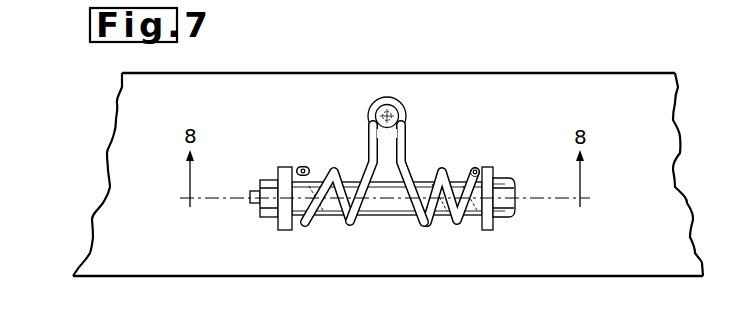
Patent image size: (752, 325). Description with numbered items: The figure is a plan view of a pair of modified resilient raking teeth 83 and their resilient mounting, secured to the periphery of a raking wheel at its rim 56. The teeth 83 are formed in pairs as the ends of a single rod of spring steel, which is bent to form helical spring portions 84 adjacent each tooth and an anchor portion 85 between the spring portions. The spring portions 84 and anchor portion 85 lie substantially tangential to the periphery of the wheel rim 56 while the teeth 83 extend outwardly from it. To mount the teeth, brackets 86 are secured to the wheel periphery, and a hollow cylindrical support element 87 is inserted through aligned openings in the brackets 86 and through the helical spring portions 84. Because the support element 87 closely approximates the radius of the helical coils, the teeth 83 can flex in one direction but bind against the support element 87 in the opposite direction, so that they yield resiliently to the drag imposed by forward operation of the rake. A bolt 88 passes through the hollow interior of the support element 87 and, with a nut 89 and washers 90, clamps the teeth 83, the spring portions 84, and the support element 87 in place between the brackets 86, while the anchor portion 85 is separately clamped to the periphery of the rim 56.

The rim 56 is at (523, 74).
The resilient teeth 83 is at (300, 170).
The helical spring portions 84 is at (345, 218).
The anchor portion 85 is at (393, 98).
The washer 86 is at (287, 231).
The hollow cylindrical support element 87 is at (470, 166).
The bolt 88 is at (515, 178).
The nut 89 is at (270, 172).
The washers 90 is at (278, 229).